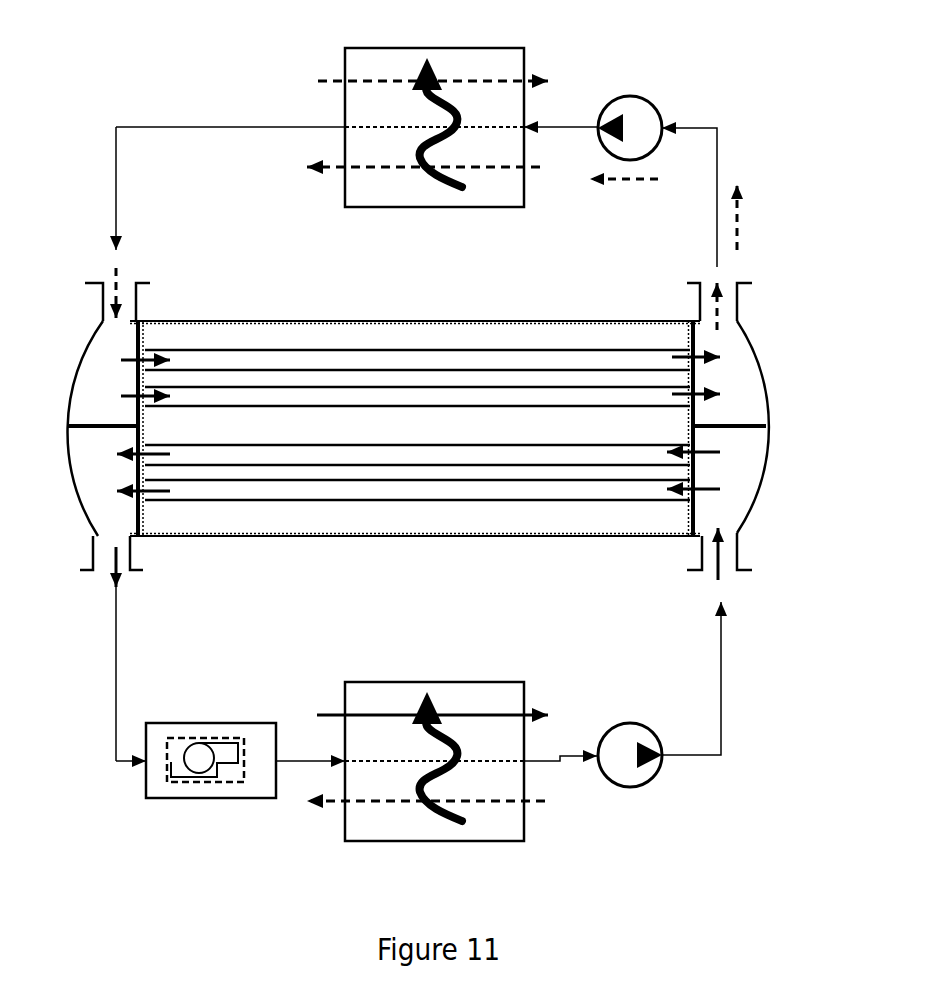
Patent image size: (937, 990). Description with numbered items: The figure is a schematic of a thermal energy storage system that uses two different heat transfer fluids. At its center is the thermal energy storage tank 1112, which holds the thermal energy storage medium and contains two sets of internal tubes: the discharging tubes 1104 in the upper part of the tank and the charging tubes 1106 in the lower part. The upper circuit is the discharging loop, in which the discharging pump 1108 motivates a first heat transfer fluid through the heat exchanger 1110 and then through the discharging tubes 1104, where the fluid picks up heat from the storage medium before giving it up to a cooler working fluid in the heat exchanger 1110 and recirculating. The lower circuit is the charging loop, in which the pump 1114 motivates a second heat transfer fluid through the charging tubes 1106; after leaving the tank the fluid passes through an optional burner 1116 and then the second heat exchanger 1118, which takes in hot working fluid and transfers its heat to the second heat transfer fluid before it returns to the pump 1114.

The discharging tubes 1104 is at (493, 395).
The charging tubes 1106 is at (498, 492).
The discharging pump 1108 is at (652, 108).
The heat exchanger 1110 is at (343, 60).
The thermal energy storage tank 1112 is at (353, 320).
The pump 1114 is at (632, 720).
The burner 1116 is at (212, 723).
The second heat exchanger 1118 is at (394, 681).